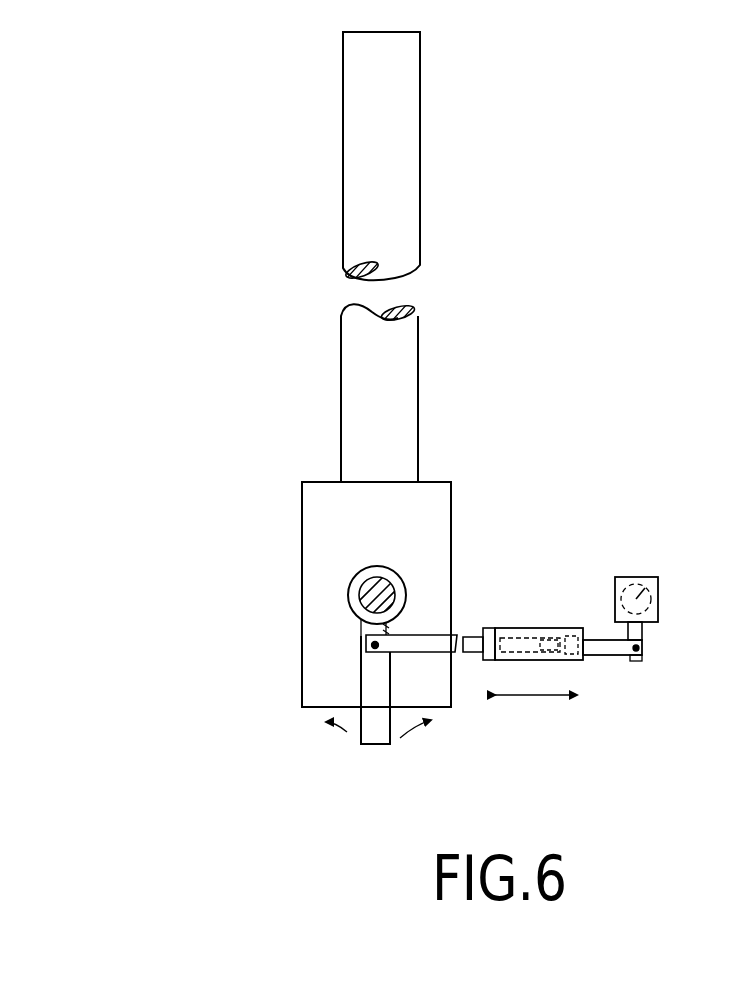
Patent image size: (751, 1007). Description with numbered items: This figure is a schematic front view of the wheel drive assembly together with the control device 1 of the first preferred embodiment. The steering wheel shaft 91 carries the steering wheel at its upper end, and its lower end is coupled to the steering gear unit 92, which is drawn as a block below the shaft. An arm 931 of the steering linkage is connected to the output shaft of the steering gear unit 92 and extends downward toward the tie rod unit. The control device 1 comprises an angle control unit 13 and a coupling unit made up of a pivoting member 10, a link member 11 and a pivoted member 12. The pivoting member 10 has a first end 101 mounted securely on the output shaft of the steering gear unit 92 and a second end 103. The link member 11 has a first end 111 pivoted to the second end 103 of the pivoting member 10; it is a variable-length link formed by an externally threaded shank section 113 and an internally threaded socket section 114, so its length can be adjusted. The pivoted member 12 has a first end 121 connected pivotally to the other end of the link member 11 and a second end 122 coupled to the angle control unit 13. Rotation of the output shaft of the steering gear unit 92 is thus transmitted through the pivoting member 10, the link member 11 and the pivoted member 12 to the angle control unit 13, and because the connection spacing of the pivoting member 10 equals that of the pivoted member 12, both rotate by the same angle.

The control device 1 is at (541, 600).
The pivoting member 10 is at (390, 628).
The first end of pivoting member 101 is at (392, 580).
The link member 11 is at (545, 630).
The first end of link member 111 is at (370, 650).
The externally threaded shank section 113 is at (452, 666).
The internally threaded socket section 114 is at (578, 668).
The pivoted member 12 is at (645, 632).
The first end of pivoted member 121 is at (640, 662).
The second end of pivoted member 122 is at (660, 577).
The angle control unit 13 is at (635, 577).
The steering wheel shaft 91 is at (385, 208).
The steering gear unit 92 is at (451, 502).
The arm 931 is at (378, 737).
The second end of pivoting member 103 is at (375, 645).